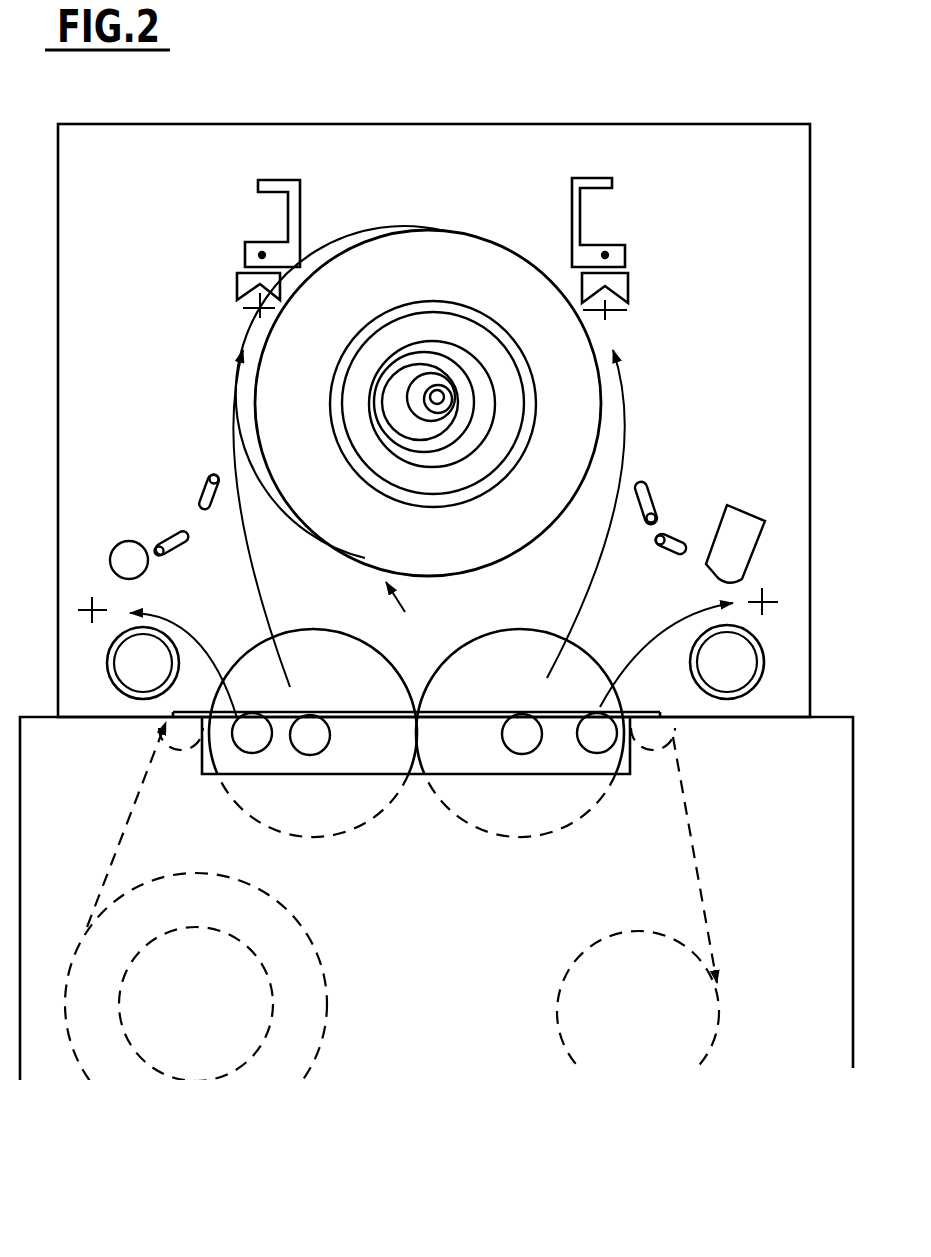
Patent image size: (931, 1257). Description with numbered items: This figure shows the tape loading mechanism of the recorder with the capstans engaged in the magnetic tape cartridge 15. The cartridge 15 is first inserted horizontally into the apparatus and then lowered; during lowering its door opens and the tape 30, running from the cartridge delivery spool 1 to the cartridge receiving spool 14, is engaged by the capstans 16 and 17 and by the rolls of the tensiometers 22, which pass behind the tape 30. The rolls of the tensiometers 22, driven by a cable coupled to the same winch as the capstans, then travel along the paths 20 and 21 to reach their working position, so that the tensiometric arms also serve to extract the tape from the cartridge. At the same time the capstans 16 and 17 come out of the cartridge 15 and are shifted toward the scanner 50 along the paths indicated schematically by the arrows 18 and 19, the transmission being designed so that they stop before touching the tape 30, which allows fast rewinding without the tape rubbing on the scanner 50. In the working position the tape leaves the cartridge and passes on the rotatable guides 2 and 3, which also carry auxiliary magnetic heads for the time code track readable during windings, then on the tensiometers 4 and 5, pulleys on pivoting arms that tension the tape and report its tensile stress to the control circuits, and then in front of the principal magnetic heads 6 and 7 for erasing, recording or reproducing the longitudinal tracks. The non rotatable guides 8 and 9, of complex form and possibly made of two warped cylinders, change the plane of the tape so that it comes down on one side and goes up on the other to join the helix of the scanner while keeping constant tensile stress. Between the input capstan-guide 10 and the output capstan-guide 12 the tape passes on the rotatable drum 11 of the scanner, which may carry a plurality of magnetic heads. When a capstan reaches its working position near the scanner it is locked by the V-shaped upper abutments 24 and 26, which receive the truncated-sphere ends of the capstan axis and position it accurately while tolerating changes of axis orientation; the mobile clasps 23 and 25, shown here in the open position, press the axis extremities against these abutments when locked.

The cartridge delivery spool 1 is at (310, 940).
The rotatable guide 2 is at (125, 664).
The rotatable guide 3 is at (733, 667).
The tensiometer 4 is at (88, 600).
The tensiometer 5 is at (767, 596).
The principal magnetic head 6 is at (129, 541).
The principal magnetic head 7 is at (743, 527).
The non rotatable guide 8 is at (181, 510).
The non rotatable guide 9 is at (667, 518).
The input capstan-guide 10 is at (256, 312).
The rotatable drum 11 is at (437, 250).
The output capstan-guide 12 is at (608, 316).
The cartridge receiving spool 14 is at (575, 962).
The cartridge 15 is at (812, 752).
The capstan 16 is at (313, 738).
The capstan 17 is at (522, 738).
The path 18 is at (250, 545).
The path 19 is at (596, 562).
The path 20 is at (193, 640).
The path 21 is at (656, 636).
The rolls of the tensiometers 22 is at (250, 738).
The mobile clasp 23 is at (300, 200).
The V-shaped upper abutment 24 is at (240, 287).
The mobile clasp 25 is at (572, 200).
The V-shaped upper abutment 26 is at (618, 287).
The tape 30 is at (122, 815).
The scanner 50 is at (413, 611).